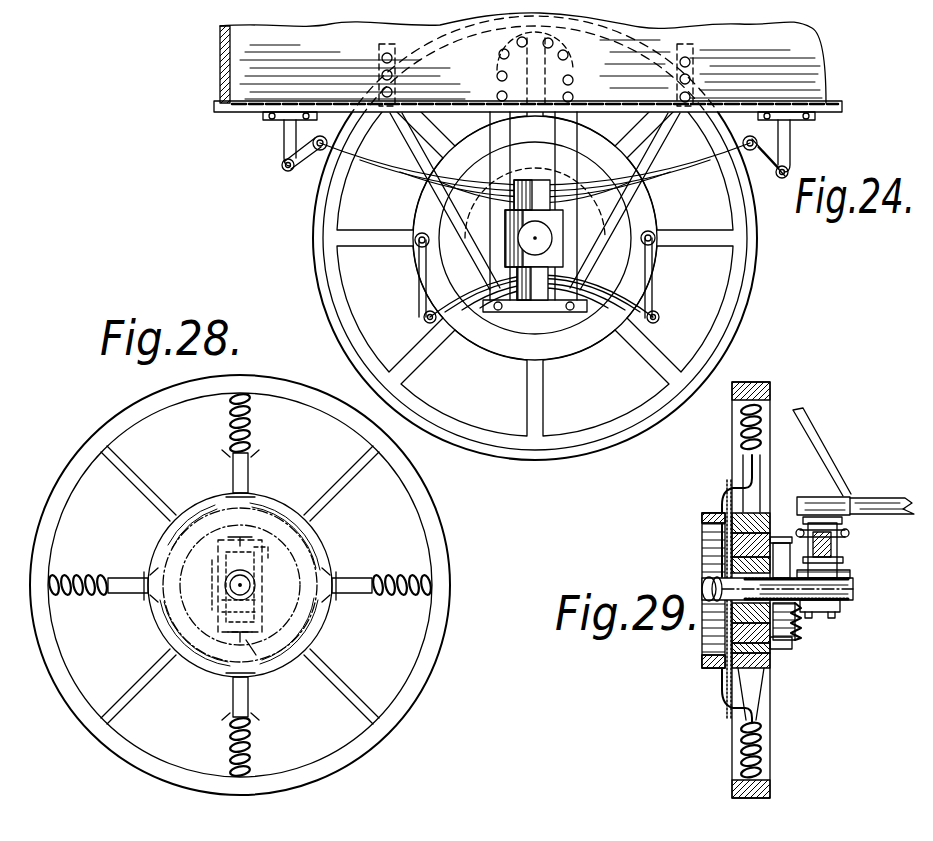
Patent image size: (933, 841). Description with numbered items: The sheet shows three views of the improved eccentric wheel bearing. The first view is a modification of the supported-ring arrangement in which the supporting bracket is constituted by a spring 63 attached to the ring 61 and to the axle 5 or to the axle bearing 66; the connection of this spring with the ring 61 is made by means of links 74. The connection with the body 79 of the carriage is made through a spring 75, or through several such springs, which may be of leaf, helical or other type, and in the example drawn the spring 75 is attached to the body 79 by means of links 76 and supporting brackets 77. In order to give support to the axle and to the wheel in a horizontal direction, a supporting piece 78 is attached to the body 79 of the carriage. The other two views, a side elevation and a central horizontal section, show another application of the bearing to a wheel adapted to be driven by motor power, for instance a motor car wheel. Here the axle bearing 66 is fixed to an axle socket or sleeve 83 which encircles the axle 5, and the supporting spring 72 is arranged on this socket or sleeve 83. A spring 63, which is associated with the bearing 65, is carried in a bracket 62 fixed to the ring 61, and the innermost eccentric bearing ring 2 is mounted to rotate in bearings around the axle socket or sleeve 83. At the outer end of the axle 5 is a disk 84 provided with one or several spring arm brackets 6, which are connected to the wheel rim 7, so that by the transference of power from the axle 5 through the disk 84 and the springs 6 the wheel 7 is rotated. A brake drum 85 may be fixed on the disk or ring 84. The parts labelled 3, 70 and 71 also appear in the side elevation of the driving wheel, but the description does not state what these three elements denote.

In FIG. 28, the innermost eccentric bearing ring 2 is at (212, 583).
In FIG. 28, the hub bearing 3 is at (287, 607).
In FIG. 24, the axle 5 is at (522, 230).
In FIG. 28, the axle 5 is at (262, 580).
In FIG. 29, the axle 5 is at (740, 589).
In FIG. 28, the spring arm brackets 6 is at (250, 737).
In FIG. 29, the spring arm brackets 6 is at (740, 754).
In FIG. 24, the wheel rim 7 is at (535, 238).
In FIG. 28, the wheel rim 7 is at (358, 748).
In FIG. 24, the ring 61 is at (427, 214).
In FIG. 28, the ring 61 is at (186, 642).
In FIG. 29, the ring 61 is at (747, 526).
In FIG. 28, the bracket 62 is at (240, 537).
In FIG. 29, the bracket 62 is at (788, 644).
In FIG. 24, the spring 63 is at (502, 282).
In FIG. 28, the spring 63 is at (248, 660).
In FIG. 28, the bearing 65 is at (333, 570).
In FIG. 24, the axle bearing 66 is at (538, 265).
In FIG. 28, the axle bearing 66 is at (246, 545).
In FIG. 29, the axle bearing 66 is at (797, 610).
In FIG. 28, the cylinder 70 is at (210, 563).
In FIG. 28, the piston 71 is at (172, 618).
In FIG. 29, the supporting spring 72 is at (838, 560).
In FIG. 24, the links 74 is at (420, 272).
In FIG. 24, the spring 75 is at (690, 166).
In FIG. 24, the links 76 is at (302, 150).
In FIG. 24, the supporting brackets 77 is at (283, 140).
In FIG. 24, the supporting piece 78 is at (536, 70).
In FIG. 24, the body 79 is at (528, 62).
In FIG. 29, the body 79 is at (840, 498).
In FIG. 29, the axle socket or sleeve 83 is at (840, 580).
In FIG. 28, the disk 84 is at (224, 670).
In FIG. 29, the disk 84 is at (727, 688).
In FIG. 29, the brake drum 85 is at (719, 513).